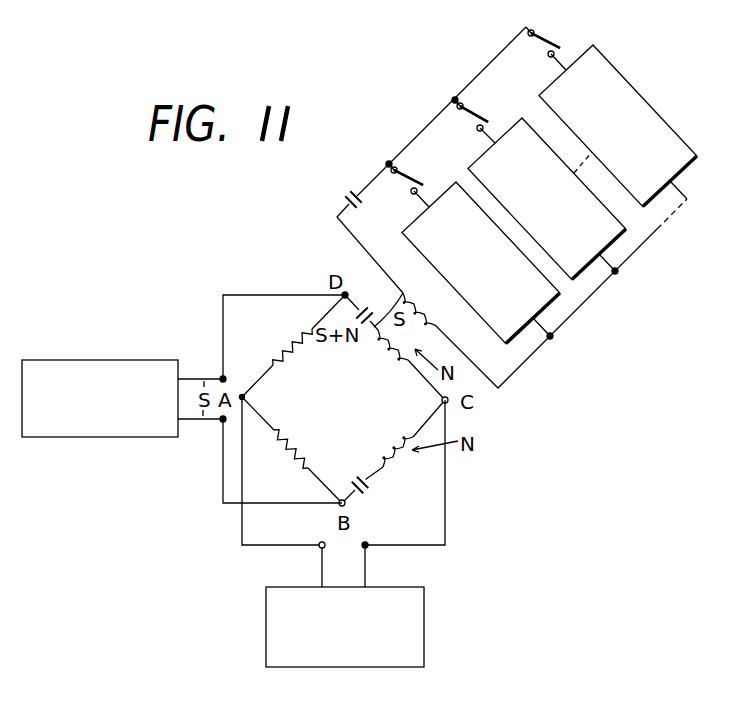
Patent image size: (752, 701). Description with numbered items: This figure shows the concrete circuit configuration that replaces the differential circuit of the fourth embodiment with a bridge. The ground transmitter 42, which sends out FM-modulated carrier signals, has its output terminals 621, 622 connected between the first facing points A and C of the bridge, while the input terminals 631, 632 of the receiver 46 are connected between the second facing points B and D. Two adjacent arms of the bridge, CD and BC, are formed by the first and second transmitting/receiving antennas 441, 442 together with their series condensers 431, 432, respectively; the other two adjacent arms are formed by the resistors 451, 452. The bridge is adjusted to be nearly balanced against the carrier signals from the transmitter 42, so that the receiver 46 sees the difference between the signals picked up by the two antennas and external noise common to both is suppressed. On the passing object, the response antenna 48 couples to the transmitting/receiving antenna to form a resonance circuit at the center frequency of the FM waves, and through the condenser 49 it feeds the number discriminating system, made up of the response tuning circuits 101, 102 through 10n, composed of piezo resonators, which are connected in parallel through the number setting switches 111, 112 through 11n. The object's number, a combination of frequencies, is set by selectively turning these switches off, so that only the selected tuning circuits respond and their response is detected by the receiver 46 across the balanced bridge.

The receiver 46 is at (100, 360).
The transmitter 42 is at (424, 626).
The input terminal of the receiver 631 is at (222, 379).
The input terminal of the receiver 632 is at (222, 420).
The output terminal of the transmitter 621 is at (321, 547).
The output terminal of the transmitter 622 is at (366, 548).
The resistor 451 is at (297, 344).
The resistor 452 is at (303, 452).
The series condenser 431 is at (377, 300).
The series condenser 432 is at (359, 483).
The first transmitting/receiving antenna 441 is at (387, 340).
The second transmitting/receiving antenna 442 is at (394, 445).
The response antenna 48 is at (420, 299).
The condenser 49 is at (354, 189).
The number setting switch 111 is at (421, 150).
The number setting switch 112 is at (483, 88).
The number setting switch 11n is at (553, 10).
The response tuning circuit 101 is at (548, 312).
The response tuning circuit 102 is at (614, 239).
The response tuning circuit 10n is at (651, 110).